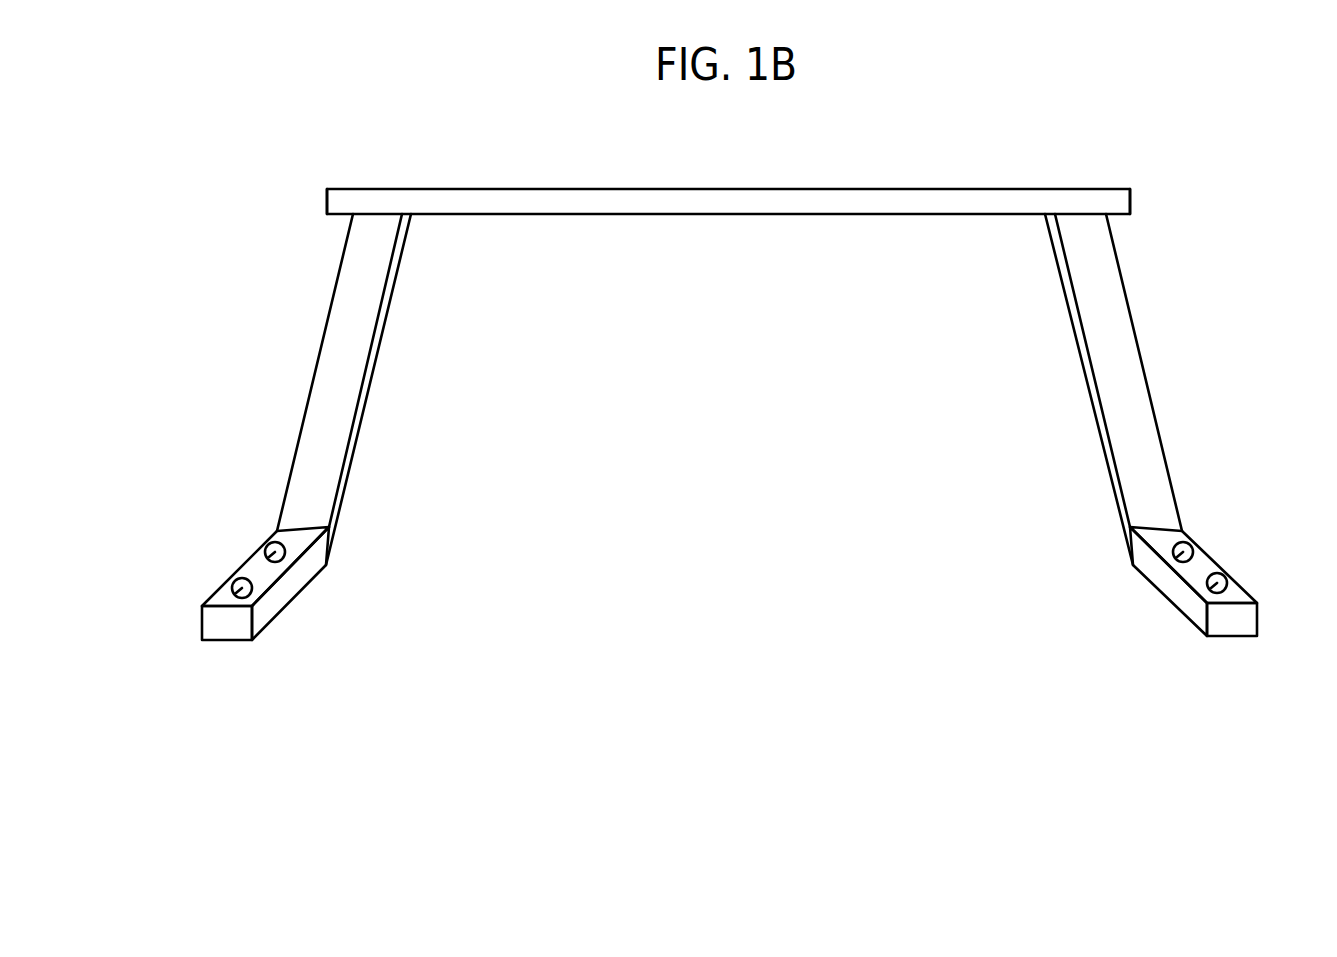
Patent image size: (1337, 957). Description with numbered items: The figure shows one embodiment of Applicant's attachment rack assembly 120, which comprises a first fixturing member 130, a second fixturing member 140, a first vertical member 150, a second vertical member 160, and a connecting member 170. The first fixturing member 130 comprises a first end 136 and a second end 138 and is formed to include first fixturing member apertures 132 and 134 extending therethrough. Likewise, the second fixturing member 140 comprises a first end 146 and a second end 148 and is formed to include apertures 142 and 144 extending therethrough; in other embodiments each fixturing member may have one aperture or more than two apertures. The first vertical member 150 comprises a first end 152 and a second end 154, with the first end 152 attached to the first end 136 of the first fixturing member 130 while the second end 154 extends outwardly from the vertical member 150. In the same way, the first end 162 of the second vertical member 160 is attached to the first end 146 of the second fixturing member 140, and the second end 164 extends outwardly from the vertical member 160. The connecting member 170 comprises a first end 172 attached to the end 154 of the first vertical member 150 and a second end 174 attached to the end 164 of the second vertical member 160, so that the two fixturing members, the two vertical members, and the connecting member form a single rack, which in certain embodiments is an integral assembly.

The attachment rack assembly 120 is at (695, 795).
The first fixturing member 130 is at (279, 654).
The first fixturing member aperture 132 is at (232, 588).
The first fixturing member aperture 134 is at (265, 551).
The first end of first fixturing member 136 is at (325, 571).
The second end of first fixturing member 138 is at (258, 638).
The second fixturing member 140 is at (1173, 651).
The second fixturing member aperture 142 is at (1227, 583).
The second fixturing member aperture 144 is at (1193, 551).
The first end of second fixturing member 146 is at (1133, 566).
The second end of second fixturing member 148 is at (1203, 634).
The first vertical member 150 is at (390, 389).
The first end of first vertical member 152 is at (338, 528).
The second end of first vertical member 154 is at (406, 243).
The second vertical member 160 is at (1061, 389).
The first end of second vertical member 162 is at (1122, 526).
The second end of second vertical member 164 is at (1052, 243).
The connecting member 170 is at (746, 252).
The first end of connecting member 172 is at (380, 189).
The second end of connecting member 174 is at (1083, 189).